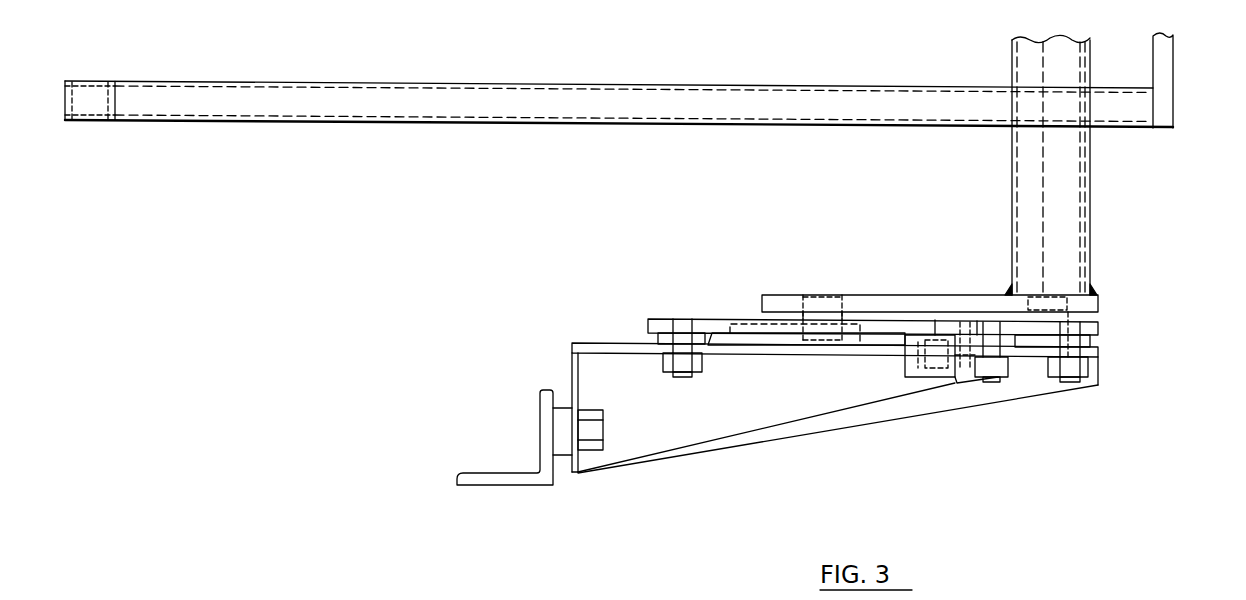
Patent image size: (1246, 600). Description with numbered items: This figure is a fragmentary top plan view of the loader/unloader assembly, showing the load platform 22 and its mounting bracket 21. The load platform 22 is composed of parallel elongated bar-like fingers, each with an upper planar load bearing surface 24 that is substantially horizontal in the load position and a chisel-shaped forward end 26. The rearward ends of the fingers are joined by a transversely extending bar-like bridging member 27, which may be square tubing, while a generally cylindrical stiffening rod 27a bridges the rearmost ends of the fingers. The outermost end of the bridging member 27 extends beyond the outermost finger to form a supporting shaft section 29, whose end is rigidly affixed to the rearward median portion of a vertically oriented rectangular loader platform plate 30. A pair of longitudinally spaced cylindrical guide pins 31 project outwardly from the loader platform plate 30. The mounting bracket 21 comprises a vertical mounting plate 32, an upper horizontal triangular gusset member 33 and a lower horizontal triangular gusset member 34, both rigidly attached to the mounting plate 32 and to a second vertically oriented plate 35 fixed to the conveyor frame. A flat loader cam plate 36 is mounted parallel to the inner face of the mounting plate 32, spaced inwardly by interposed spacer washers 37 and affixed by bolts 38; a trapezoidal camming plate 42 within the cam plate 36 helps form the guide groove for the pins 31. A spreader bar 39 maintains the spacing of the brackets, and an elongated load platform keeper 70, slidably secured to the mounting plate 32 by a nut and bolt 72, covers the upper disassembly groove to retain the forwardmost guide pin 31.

The mounting bracket 21 is at (768, 374).
The load platform 22 is at (619, 107).
The upper planar load bearing surface 24 is at (381, 104).
The chisel-shaped forward end 26 is at (90, 104).
The bridging member 27 is at (1054, 157).
The stiffening rod 27a is at (1167, 63).
The supporting shaft section 29 is at (1012, 177).
The loader platform plate 30 is at (893, 293).
The guide pins 31 is at (803, 317).
The mounting plate 32 is at (575, 341).
The upper gusset member 33 is at (672, 420).
The lower gusset member 34 is at (748, 447).
The second vertically oriented plate 35 is at (572, 383).
The loader cam plate 36 is at (665, 318).
The spacer washers 37 is at (658, 338).
The bolts 38 is at (695, 371).
The spreader bar 39 is at (1082, 222).
The camming plate 42 is at (777, 342).
The load platform keeper 70 is at (941, 358).
The nut and bolt 72 is at (935, 350).